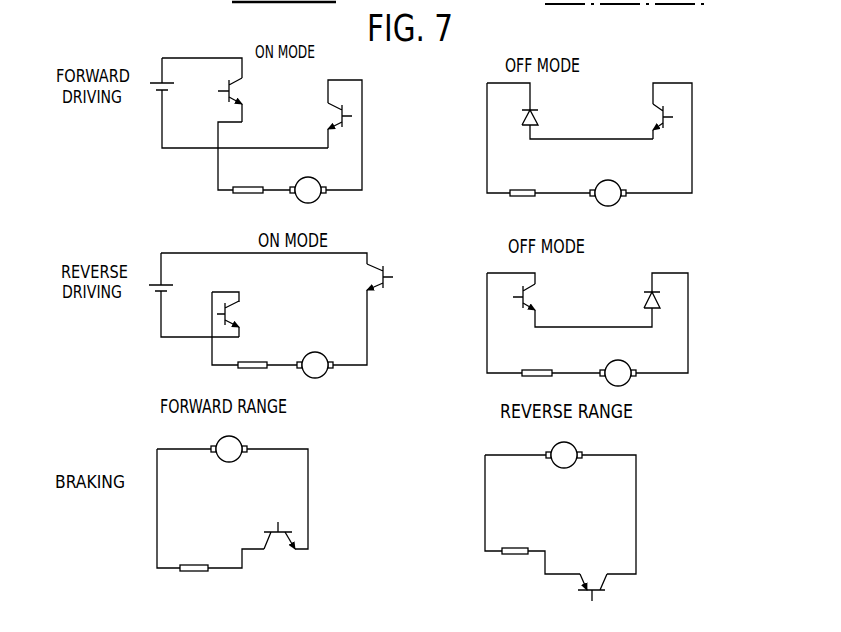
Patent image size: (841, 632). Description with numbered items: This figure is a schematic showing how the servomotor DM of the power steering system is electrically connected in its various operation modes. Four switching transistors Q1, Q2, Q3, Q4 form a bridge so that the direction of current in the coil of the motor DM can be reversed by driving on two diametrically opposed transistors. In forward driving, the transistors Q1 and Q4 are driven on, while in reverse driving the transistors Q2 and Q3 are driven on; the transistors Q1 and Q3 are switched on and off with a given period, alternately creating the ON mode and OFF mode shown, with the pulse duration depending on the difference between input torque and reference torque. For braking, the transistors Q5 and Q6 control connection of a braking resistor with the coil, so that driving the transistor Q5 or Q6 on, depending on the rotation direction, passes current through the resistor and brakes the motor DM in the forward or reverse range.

The switching transistor Q1 is at (240, 91).
The switching transistor Q2 is at (388, 305).
The switching transistor Q3 is at (363, 280).
The switching transistor Q4 is at (488, 116).
The switching transistor Q5 is at (279, 551).
The switching transistor Q6 is at (592, 575).
The motor DM is at (423, 311).